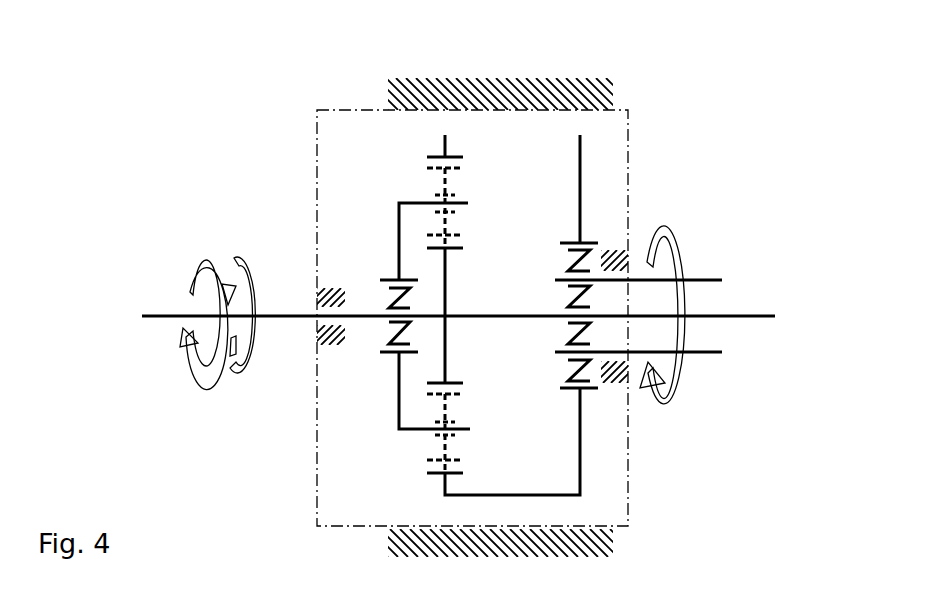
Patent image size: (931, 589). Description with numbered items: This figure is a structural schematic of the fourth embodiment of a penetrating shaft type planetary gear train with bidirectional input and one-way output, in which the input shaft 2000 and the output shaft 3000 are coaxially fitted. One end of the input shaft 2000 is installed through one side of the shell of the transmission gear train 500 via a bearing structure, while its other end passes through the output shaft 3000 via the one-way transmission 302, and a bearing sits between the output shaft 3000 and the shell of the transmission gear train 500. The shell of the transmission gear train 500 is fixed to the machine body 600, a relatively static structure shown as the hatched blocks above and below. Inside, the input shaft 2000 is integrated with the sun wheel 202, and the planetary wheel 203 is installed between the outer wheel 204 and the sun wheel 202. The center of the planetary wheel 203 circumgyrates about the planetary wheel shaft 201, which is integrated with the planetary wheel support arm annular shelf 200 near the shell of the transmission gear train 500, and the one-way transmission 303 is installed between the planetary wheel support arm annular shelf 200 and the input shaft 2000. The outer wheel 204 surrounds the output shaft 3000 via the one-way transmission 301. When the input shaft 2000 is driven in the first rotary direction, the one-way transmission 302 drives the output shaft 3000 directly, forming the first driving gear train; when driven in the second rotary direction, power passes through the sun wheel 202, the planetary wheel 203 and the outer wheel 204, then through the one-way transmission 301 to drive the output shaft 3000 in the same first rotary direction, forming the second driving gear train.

The input shaft 2000 is at (172, 315).
The output shaft 3000 is at (702, 277).
The shell of the transmission gear train 500 is at (310, 217).
The machine body 600 is at (490, 98).
The planetary wheel support arm annular shelf 200 is at (397, 232).
The planetary wheel shaft 201 is at (460, 433).
The sun wheel 202 is at (465, 247).
The planetary wheel 203 is at (440, 183).
The outer wheel 204 is at (428, 470).
The one-way transmission 301 is at (565, 262).
The one-way transmission 302 is at (573, 332).
The one-way transmission 303 is at (392, 297).